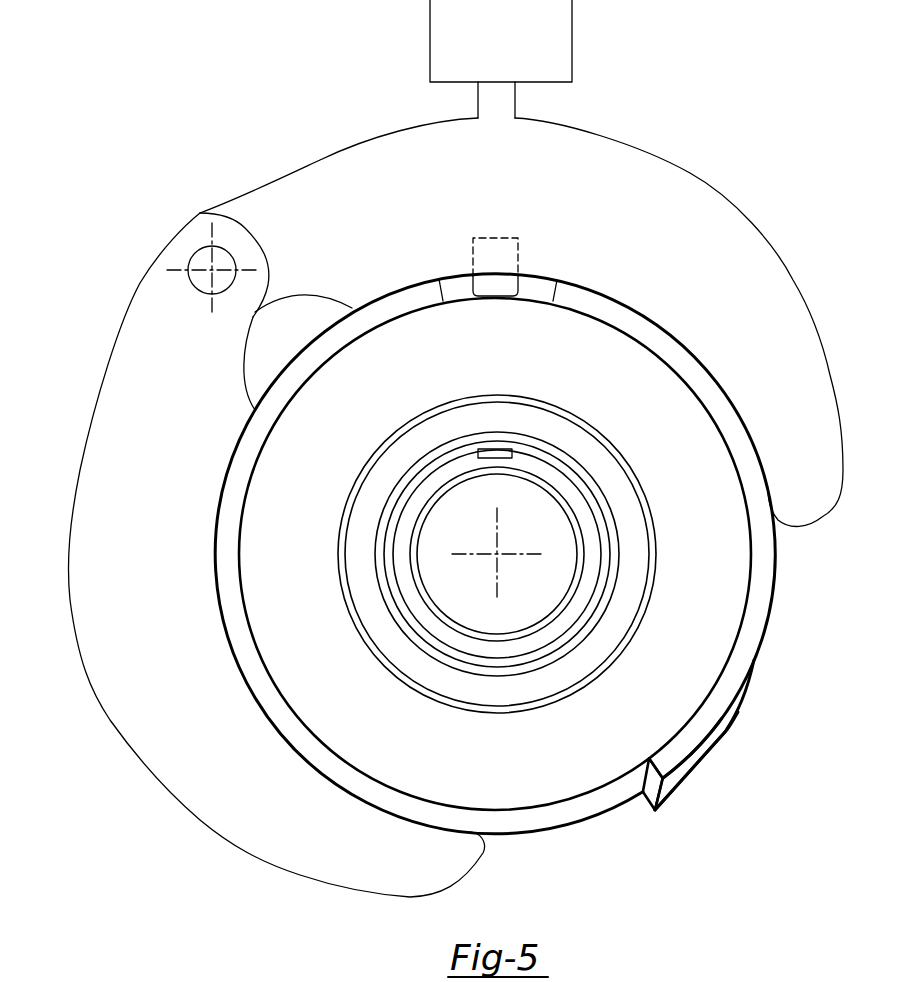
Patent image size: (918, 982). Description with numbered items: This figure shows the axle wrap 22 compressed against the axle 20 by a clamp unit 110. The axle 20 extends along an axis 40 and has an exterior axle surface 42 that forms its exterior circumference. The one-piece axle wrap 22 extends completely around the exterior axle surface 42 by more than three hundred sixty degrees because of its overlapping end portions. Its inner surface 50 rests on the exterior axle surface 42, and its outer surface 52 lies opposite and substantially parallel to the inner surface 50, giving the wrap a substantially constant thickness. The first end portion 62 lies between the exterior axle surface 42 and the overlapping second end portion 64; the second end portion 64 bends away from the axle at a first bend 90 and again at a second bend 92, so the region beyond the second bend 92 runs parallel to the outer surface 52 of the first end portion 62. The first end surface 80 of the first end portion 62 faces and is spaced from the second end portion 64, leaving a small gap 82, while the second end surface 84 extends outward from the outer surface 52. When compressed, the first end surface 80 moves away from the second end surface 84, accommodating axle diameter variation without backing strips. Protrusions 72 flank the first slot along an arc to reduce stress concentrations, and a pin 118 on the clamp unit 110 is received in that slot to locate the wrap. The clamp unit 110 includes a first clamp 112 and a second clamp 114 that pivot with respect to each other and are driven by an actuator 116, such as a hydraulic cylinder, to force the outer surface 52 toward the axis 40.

The actuator 116 is at (518, 59).
The first clamp 112 is at (536, 186).
The second clamp 114 is at (134, 544).
The clamp unit 110 is at (172, 231).
The axle wrap 22 is at (287, 363).
The axle 20 is at (467, 554).
The exterior axle surface 42 is at (255, 459).
The protrusions 72 is at (452, 276).
The pin 118 is at (498, 285).
The axis 40 is at (503, 553).
The inner surface 50 is at (300, 716).
The outer surface 52 is at (290, 743).
The first bend 90 is at (730, 701).
The second bend 92 is at (720, 745).
The gap 82 is at (684, 748).
The second end portion 64 is at (696, 793).
The second end surface 84 is at (643, 797).
The first end portion 62 is at (664, 783).
The first end surface 80 is at (667, 757).